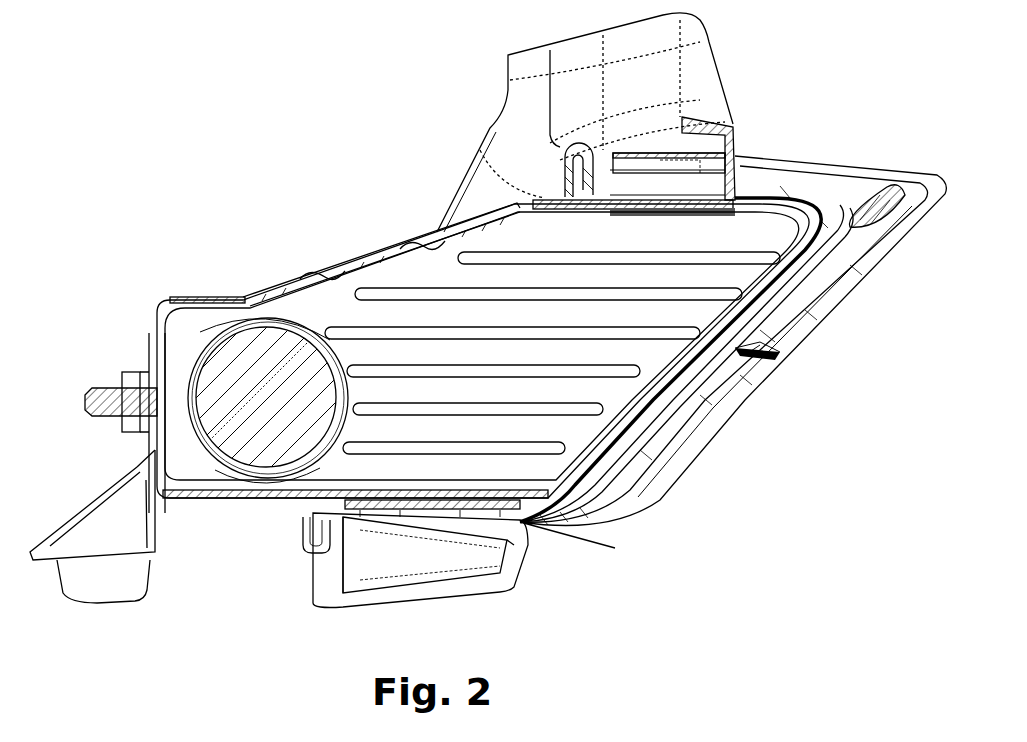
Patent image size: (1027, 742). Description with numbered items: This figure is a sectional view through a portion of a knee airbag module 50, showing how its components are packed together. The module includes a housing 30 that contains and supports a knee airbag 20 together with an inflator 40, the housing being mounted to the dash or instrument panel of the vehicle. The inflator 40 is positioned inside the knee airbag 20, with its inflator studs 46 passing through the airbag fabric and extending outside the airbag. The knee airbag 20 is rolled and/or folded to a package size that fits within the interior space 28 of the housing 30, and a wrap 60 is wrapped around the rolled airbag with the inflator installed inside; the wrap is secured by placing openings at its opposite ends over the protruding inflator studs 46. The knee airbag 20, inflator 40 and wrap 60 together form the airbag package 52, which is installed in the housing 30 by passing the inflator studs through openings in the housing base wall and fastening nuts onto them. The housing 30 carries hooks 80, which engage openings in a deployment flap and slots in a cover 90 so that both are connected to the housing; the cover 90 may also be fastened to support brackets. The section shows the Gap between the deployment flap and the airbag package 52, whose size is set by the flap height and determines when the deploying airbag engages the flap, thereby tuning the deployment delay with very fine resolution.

The knee airbag module 50 is at (290, 118).
The knee airbag 20 is at (438, 292).
The housing 30 is at (345, 270).
The inflator 40 is at (235, 425).
The inflator studs 46 is at (117, 400).
The airbag package 52 is at (588, 500).
The wrap 60 is at (665, 440).
The hooks 80 is at (748, 128).
The interior space 28 is at (822, 218).
The cover 90 is at (805, 315).
The gap Gap is at (600, 327).